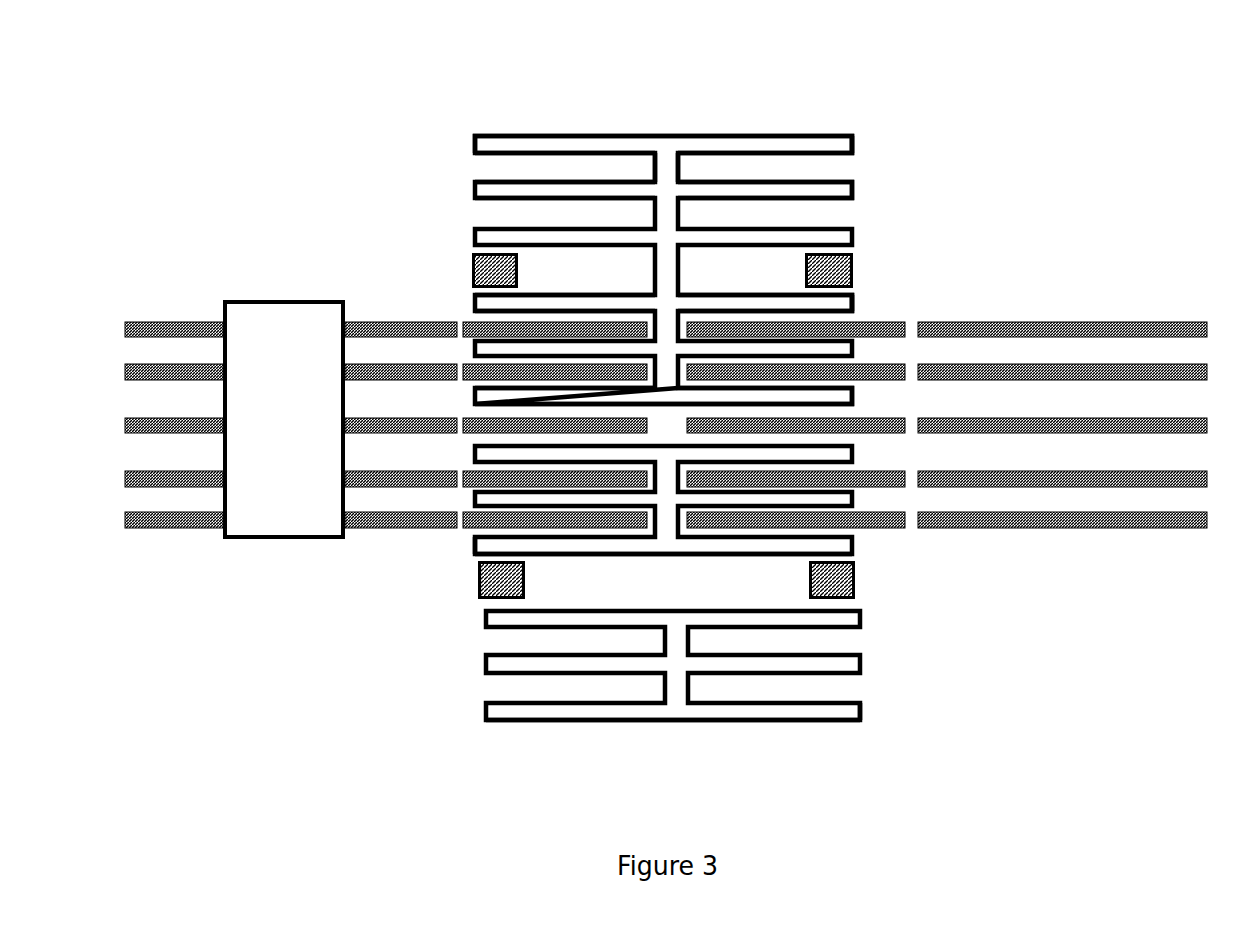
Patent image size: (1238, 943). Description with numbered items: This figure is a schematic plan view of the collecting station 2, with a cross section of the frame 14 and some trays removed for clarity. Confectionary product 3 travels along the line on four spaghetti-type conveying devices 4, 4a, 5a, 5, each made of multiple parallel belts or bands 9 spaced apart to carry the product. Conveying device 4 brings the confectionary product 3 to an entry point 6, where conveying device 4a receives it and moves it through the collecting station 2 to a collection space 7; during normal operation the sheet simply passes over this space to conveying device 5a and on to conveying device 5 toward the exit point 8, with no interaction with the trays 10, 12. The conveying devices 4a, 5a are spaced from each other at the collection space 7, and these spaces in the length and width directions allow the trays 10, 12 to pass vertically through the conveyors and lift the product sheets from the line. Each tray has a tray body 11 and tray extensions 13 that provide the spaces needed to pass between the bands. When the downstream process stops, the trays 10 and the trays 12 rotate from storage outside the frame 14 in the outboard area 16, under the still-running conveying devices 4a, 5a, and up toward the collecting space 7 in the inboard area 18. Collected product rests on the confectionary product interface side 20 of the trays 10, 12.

The collecting station 2 is at (657, 95).
The confectionary product 3 is at (285, 293).
The conveying device 4 is at (365, 316).
The conveying device 4a is at (465, 527).
The conveying device 5 is at (1119, 318).
The conveying device 5a is at (885, 522).
The entry point 6 is at (449, 318).
The collection space 7 is at (660, 425).
The exit point 8 is at (863, 298).
The belts or bands 9 is at (147, 360).
The tray 10 is at (598, 285).
The tray body 11 is at (670, 152).
The tray 12 is at (642, 562).
The tray extension 13 is at (857, 143).
The frame 14 is at (860, 587).
The outboard area 16 is at (872, 168).
The inboard area 18 is at (858, 398).
The confectionary product interface side 20 is at (473, 548).